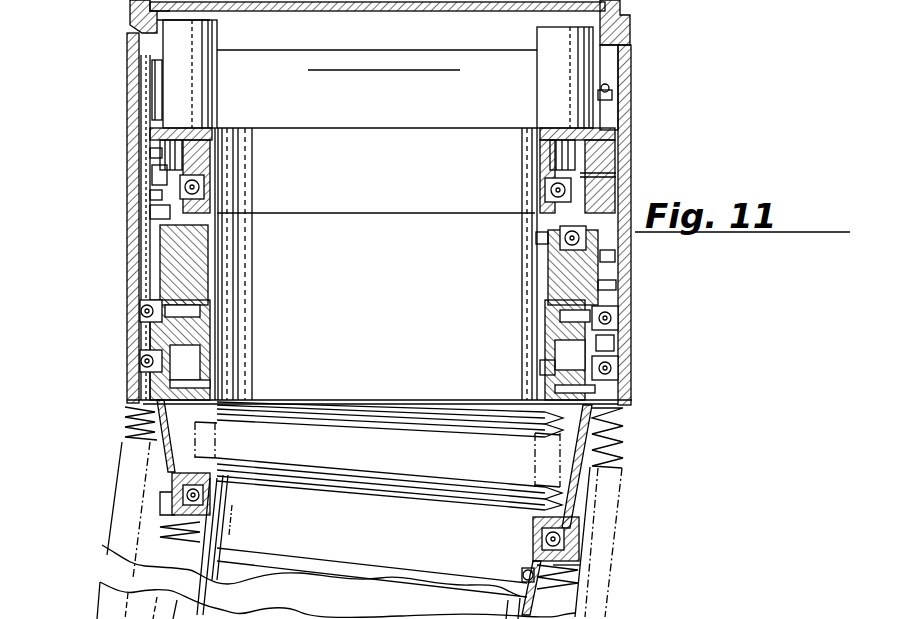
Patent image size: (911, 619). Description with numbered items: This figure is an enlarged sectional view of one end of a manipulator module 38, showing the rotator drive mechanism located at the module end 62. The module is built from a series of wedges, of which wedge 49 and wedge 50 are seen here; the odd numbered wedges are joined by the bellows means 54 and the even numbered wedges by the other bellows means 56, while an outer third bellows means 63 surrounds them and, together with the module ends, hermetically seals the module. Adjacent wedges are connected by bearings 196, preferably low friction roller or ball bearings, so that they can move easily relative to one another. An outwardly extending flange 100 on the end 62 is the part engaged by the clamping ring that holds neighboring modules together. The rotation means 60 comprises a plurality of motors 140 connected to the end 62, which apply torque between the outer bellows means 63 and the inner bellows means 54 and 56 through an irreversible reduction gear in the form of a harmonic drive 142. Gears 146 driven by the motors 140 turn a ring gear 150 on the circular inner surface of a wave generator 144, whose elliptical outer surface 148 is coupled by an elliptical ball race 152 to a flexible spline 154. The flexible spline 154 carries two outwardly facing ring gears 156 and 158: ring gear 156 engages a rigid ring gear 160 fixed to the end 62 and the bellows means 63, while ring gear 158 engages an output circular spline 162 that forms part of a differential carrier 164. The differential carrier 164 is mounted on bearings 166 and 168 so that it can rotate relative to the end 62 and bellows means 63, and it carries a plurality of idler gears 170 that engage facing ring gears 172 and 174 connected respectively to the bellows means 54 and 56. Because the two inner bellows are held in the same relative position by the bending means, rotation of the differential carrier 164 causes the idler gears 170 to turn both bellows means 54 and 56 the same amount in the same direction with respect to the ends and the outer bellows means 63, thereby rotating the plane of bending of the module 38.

The manipulator module 38 is at (636, 369).
The wedge 49 is at (210, 585).
The wedge 50 is at (130, 442).
The bellows means 54 is at (203, 448).
The bellows means 56 is at (150, 556).
The rotation means 60 is at (700, 148).
The module end 62 is at (630, 106).
The third bellows means 63 is at (125, 495).
The flange 100 is at (620, 18).
The motor 140 is at (218, 78).
The harmonic drive 142 is at (615, 175).
The wave generator 144 is at (200, 162).
The gear 146 is at (205, 142).
The elliptical outer surface 148 is at (138, 228).
The ring gear 150 is at (548, 168).
The elliptical ball race 152 is at (150, 153).
The flexible spline 154 is at (150, 173).
The ring gear 156 is at (135, 138).
The ring gear 158 is at (135, 211).
The rigid ring gear 160 is at (630, 140).
The output circular spline 162 is at (635, 188).
The differential carrier 164 is at (630, 284).
The bearing 166 is at (630, 256).
The bearing 168 is at (632, 326).
The idler gear 170 is at (150, 328).
The ring gear 172 is at (540, 250).
The ring gear 174 is at (540, 364).
The bearing 196 is at (210, 512).